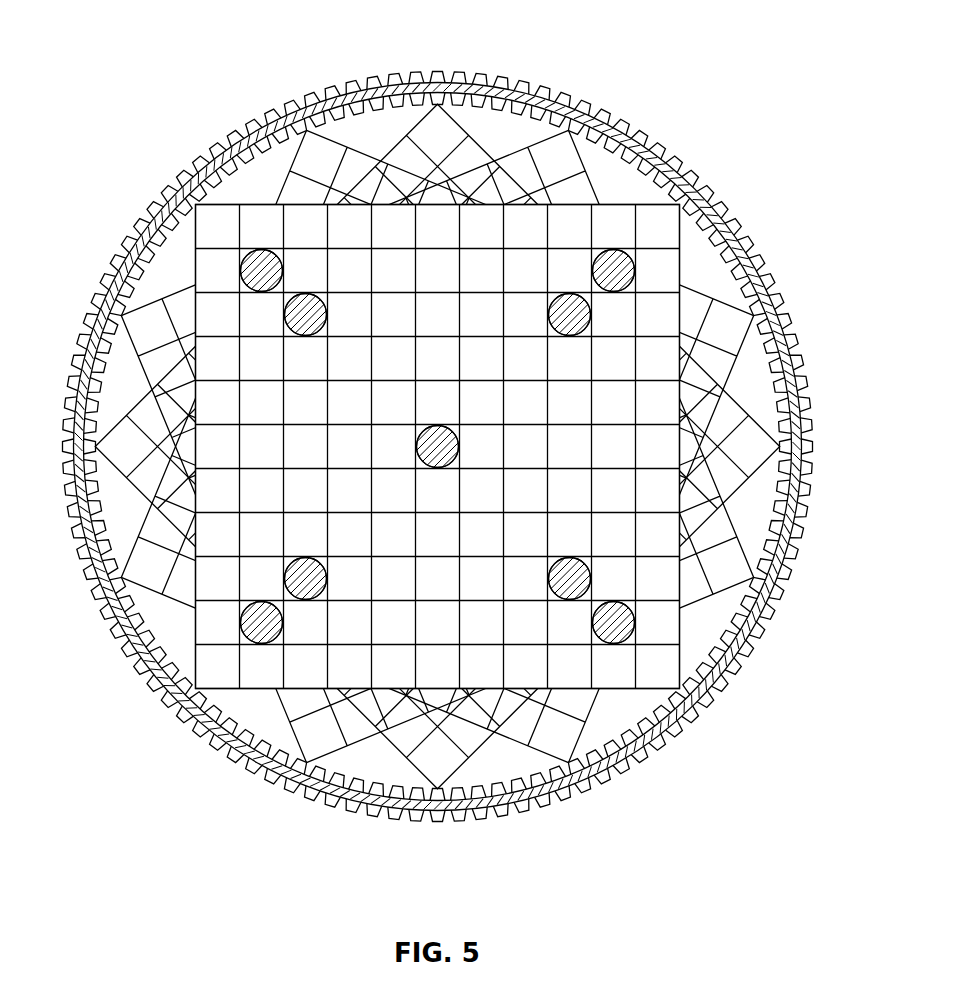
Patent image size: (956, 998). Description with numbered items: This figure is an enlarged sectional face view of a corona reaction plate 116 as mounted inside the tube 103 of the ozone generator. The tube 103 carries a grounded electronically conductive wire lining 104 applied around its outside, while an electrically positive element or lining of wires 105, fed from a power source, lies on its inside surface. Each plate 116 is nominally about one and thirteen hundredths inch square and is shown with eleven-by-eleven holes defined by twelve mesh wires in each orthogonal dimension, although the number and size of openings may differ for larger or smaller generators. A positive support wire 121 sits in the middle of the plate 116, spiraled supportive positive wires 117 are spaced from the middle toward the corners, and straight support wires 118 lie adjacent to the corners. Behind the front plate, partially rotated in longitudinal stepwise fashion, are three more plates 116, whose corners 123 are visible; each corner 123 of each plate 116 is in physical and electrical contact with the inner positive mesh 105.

The tube 103 is at (437, 452).
The grounded electronically conductive wire lining 104 is at (338, 805).
The electrically positive element or lining of wires 105 is at (272, 765).
The corona reaction plate 116 is at (506, 136).
The spiraled supportive positive wires 117 is at (285, 316).
The straight support wires 118 is at (261, 249).
The positive support wire 121 is at (440, 426).
The corners 123 is at (430, 88).